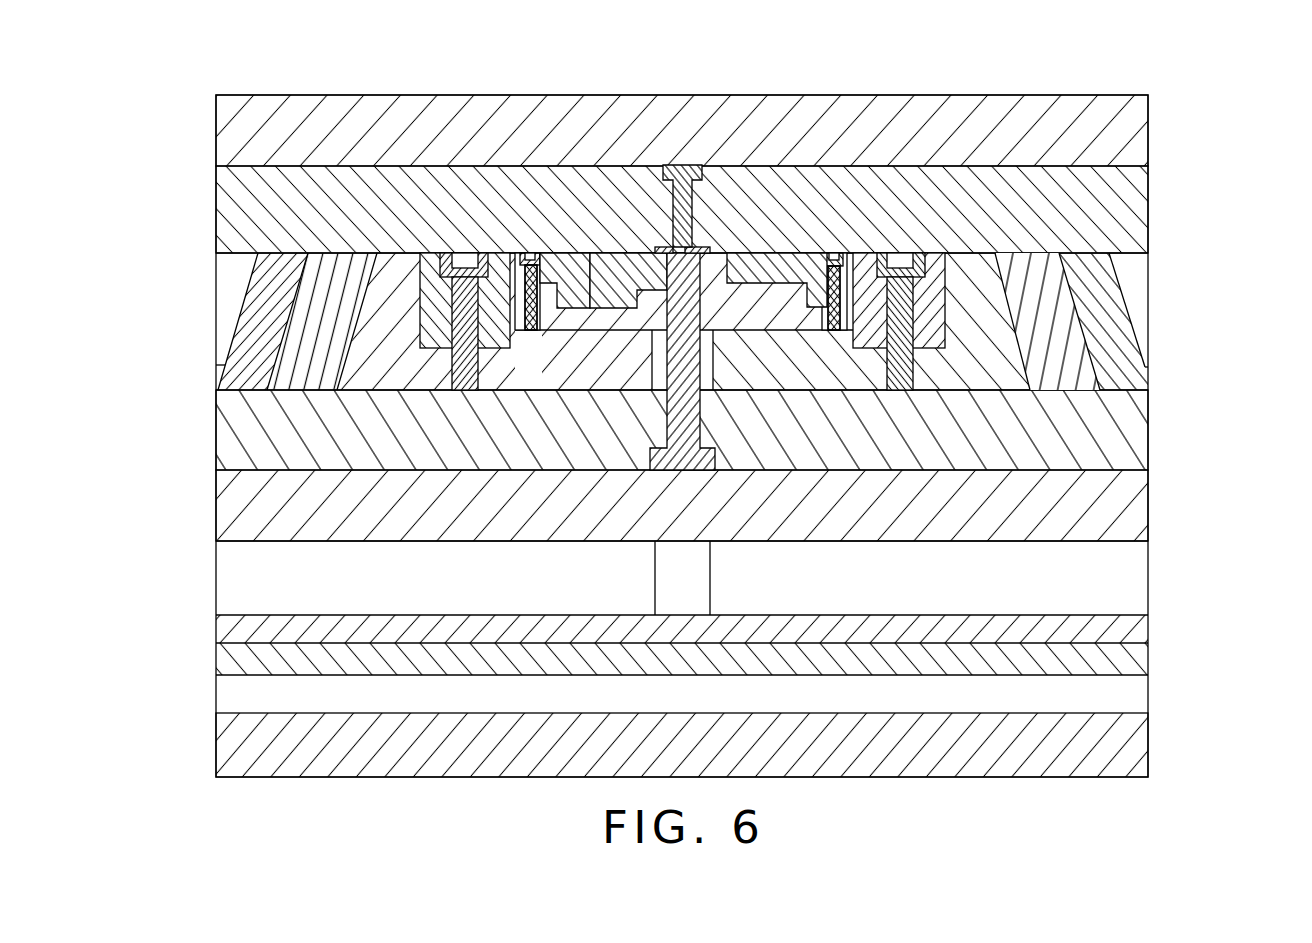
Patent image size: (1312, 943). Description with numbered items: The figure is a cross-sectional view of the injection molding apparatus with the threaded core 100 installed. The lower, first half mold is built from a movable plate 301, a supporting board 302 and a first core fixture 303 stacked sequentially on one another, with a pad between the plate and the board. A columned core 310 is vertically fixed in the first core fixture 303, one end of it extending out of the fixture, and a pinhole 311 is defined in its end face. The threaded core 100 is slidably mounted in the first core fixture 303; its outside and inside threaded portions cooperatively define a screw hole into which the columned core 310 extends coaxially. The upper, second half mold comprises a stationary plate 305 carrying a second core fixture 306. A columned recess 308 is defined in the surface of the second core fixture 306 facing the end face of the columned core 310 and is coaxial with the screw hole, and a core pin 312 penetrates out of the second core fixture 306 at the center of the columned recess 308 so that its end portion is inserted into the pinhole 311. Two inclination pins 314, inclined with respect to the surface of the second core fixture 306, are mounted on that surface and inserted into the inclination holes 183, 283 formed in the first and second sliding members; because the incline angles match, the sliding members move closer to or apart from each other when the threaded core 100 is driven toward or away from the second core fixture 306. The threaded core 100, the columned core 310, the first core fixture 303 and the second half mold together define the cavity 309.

The threaded core 100 is at (1141, 279).
The inclination hole 183 is at (283, 320).
The inclination hole 283 is at (1093, 357).
The movable plate 301 is at (1110, 755).
The supporting board 302 is at (1090, 513).
The first core fixture 303 is at (1128, 412).
The stationary plate 305 is at (1107, 143).
The second core fixture 306 is at (1083, 222).
The columned recess 308 is at (657, 244).
The cavity 309 is at (661, 249).
The columned core 310 is at (687, 402).
The pinhole 311 is at (697, 247).
The core pin 312 is at (693, 246).
The inclination pin 314 is at (1062, 320).